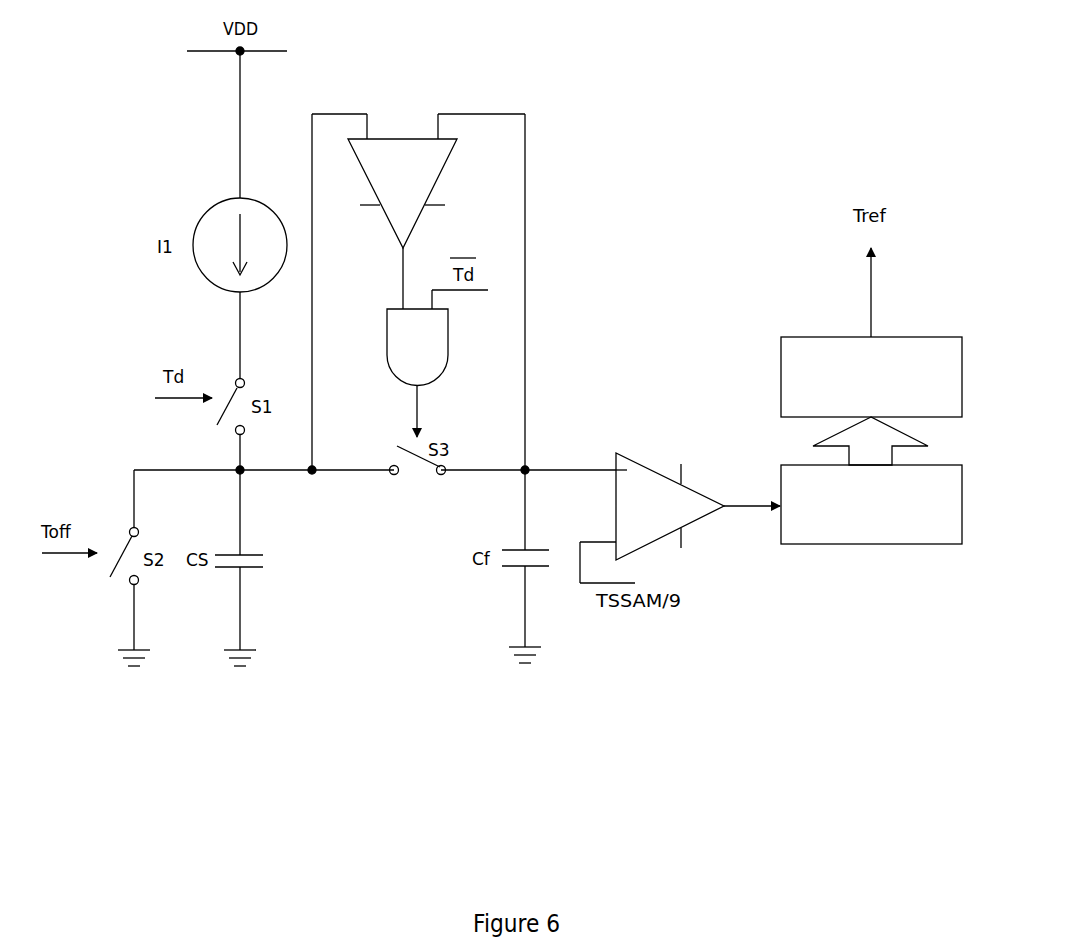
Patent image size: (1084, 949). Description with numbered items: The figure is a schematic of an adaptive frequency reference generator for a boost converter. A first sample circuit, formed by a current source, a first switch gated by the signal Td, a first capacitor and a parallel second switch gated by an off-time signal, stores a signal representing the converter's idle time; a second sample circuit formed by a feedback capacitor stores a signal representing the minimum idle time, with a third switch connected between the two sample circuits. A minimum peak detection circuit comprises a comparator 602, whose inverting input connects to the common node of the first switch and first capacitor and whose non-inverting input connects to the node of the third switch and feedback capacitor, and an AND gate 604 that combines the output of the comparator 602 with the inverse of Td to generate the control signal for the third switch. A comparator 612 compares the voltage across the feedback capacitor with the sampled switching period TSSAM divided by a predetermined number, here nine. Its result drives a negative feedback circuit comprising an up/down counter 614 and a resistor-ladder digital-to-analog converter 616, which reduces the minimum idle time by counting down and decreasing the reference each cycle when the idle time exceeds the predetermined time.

The comparator 602 is at (419, 181).
The AND gate 604 is at (433, 355).
The comparator 612 is at (659, 516).
The up/down counter 614 is at (811, 545).
The R-2R digital-to-analog converter 616 is at (877, 404).